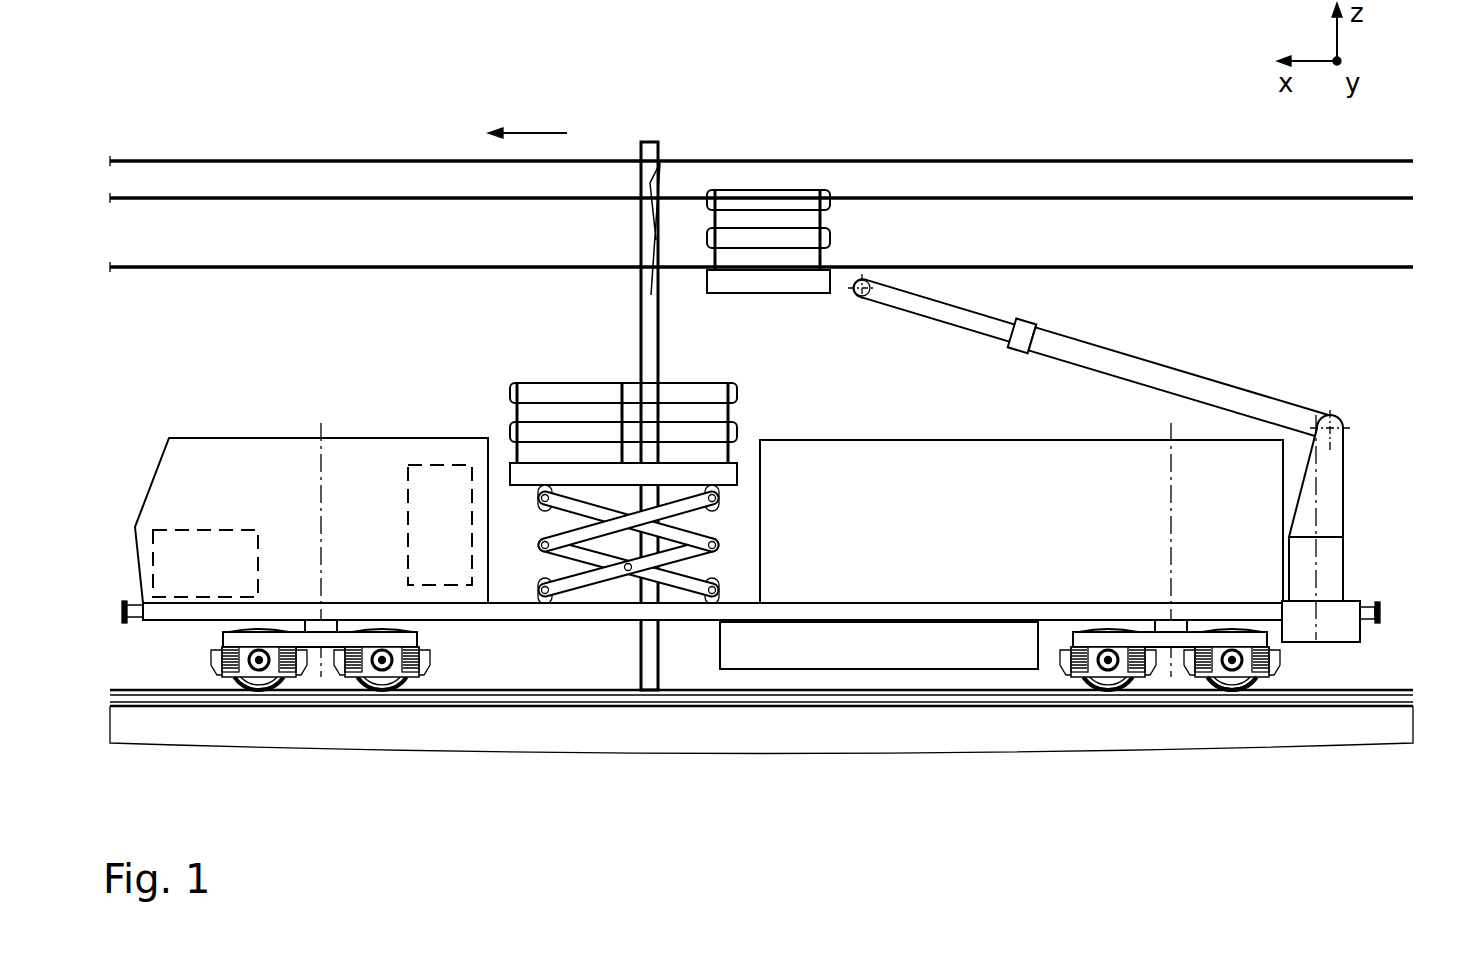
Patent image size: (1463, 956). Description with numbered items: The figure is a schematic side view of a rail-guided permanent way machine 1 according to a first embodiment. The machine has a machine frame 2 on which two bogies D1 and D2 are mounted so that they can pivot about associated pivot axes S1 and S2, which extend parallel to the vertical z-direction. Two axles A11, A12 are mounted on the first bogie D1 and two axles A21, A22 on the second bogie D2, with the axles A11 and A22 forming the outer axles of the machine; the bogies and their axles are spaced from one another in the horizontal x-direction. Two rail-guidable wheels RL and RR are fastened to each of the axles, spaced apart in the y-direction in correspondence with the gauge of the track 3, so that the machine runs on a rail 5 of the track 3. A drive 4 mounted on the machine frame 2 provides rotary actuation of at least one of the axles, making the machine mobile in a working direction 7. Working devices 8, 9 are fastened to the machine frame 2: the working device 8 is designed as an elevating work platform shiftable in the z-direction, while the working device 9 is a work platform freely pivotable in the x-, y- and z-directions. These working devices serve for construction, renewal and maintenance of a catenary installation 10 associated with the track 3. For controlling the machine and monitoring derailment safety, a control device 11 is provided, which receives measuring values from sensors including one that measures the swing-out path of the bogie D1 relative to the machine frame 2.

The permanent way machine 1 is at (954, 684).
The machine frame 2 is at (472, 620).
The track 3 is at (1428, 703).
The drive 4 is at (828, 652).
The rail 5 is at (1383, 697).
The working direction 7 is at (537, 132).
The working device 8 is at (613, 478).
The working device 9 is at (1030, 338).
The catenary installation 10 is at (232, 150).
The control device 11 is at (199, 598).
The pivot axis S1 is at (322, 463).
The pivot axis S2 is at (1172, 465).
The bogie D1 is at (327, 627).
The bogie D2 is at (1177, 627).
The axle A11 is at (259, 667).
The axle A12 is at (382, 667).
The axle A21 is at (1108, 667).
The axle A22 is at (1232, 667).
The rail-guidable wheel RR is at (1202, 685).
The rail-guidable wheel RL is at (1255, 682).